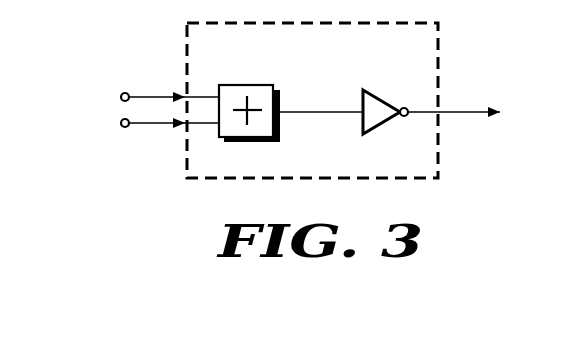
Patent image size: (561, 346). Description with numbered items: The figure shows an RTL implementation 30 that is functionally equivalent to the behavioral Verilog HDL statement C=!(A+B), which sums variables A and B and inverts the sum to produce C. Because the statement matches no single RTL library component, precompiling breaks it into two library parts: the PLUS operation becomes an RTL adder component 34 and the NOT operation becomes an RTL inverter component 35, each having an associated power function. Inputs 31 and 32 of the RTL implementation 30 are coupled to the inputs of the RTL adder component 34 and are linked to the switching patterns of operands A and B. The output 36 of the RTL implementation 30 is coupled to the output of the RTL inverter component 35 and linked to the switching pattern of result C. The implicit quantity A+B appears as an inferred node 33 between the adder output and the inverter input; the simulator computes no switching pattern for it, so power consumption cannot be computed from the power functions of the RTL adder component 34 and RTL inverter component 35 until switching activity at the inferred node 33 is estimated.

The RTL implementation 30 is at (440, 45).
The input 31 is at (127, 82).
The input 32 is at (127, 133).
The inferred node 33 is at (320, 115).
The RTL adder component 34 is at (250, 85).
The RTL inverter component 35 is at (385, 100).
The output 36 is at (492, 125).